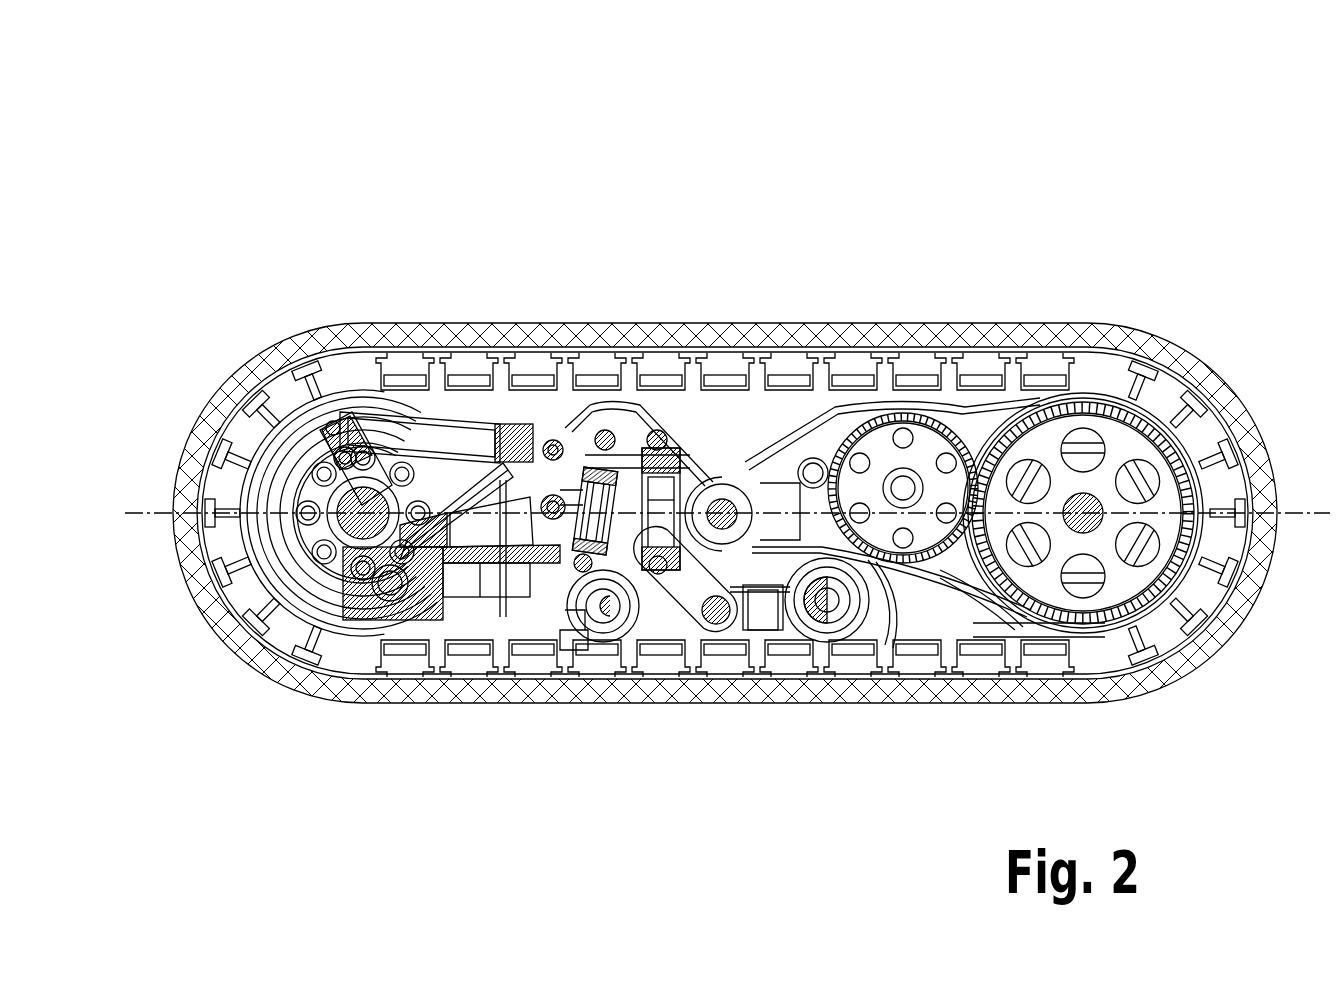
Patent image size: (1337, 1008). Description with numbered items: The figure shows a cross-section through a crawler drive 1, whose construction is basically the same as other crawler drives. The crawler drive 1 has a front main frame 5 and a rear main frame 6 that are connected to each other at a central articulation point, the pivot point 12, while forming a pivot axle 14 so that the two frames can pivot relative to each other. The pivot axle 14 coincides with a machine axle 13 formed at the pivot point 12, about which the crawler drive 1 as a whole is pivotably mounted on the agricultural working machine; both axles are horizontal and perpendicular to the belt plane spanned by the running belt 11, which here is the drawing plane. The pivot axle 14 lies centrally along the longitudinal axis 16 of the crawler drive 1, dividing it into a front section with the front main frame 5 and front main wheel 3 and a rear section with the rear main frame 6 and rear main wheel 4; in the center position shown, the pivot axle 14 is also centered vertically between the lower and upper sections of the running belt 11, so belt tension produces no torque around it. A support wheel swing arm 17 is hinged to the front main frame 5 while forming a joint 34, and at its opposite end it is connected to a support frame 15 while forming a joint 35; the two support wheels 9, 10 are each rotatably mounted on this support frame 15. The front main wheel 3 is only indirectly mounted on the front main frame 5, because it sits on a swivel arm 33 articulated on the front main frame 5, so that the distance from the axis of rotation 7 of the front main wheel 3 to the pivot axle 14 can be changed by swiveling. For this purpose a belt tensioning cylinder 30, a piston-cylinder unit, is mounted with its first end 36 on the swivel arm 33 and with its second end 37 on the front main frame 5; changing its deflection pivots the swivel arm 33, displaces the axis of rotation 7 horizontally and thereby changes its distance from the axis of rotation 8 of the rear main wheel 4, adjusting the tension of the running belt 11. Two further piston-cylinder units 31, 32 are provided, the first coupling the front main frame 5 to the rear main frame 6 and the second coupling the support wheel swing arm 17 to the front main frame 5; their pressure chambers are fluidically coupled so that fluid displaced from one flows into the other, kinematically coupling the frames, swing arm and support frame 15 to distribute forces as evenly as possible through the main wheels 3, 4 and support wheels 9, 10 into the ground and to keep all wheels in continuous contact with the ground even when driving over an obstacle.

The crawler drive 1 is at (923, 150).
The front main wheel 3 is at (320, 590).
The rear main wheel 4 is at (1070, 642).
The front main frame 5 is at (488, 542).
The rear main frame 6 is at (978, 442).
The axis of rotation 7 is at (353, 517).
The axis of rotation 8 is at (1093, 502).
The support wheel 9 is at (570, 638).
The support wheel 10 is at (875, 623).
The running belt 11 is at (1093, 324).
The pivot point 12 is at (725, 505).
The machine axle 13 is at (703, 514).
The pivot axle 14 is at (722, 514).
The support frame 15 is at (683, 594).
The longitudinal axis 16 is at (1308, 510).
The support wheel swing arm 17 is at (678, 624).
The belt tensioning cylinder 30 is at (407, 433).
The piston-cylinder unit 31 is at (600, 485).
The piston-cylinder unit 32 is at (660, 527).
The swivel arm 33 is at (293, 477).
The joint 34 is at (545, 503).
The joint 35 is at (727, 624).
The first end 36 is at (333, 505).
The second end 37 is at (557, 445).